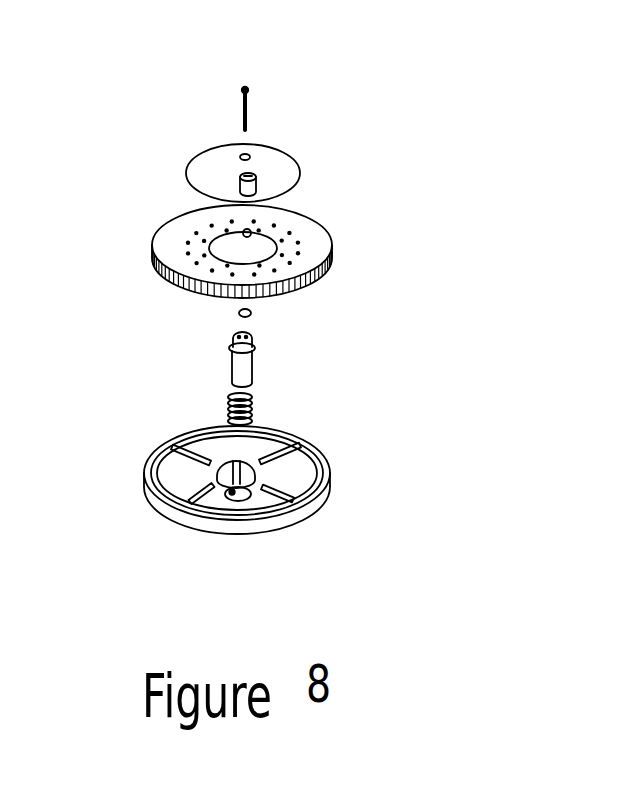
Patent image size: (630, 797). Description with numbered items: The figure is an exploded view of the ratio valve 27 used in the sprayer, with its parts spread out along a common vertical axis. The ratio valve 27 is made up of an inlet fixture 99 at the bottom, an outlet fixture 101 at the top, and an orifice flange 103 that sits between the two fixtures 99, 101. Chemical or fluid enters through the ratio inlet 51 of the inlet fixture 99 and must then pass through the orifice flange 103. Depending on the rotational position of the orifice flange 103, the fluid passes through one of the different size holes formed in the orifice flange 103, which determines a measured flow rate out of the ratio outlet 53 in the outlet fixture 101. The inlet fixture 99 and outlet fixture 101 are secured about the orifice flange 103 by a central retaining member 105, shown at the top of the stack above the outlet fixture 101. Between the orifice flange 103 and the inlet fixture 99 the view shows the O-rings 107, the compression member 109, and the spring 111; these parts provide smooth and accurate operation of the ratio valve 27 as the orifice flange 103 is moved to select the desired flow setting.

The ratio valve 27 is at (444, 128).
The ratio inlet 51 is at (218, 495).
The ratio outlet 53 is at (247, 177).
The inlet fixture 99 is at (157, 462).
The outlet fixture 101 is at (198, 182).
The orifice flange 103 is at (162, 280).
The central retaining member 105 is at (250, 98).
The O-rings 107 is at (251, 233).
The compression member 109 is at (250, 368).
The spring 111 is at (253, 415).